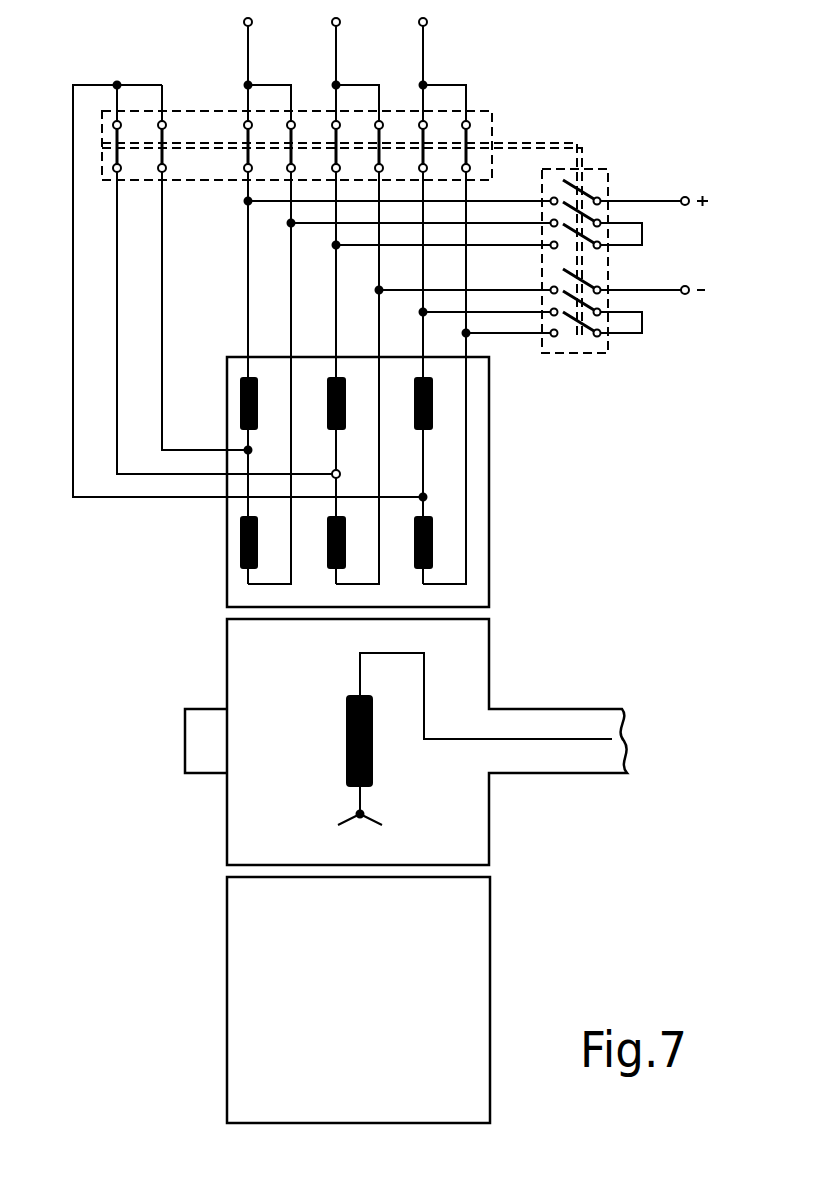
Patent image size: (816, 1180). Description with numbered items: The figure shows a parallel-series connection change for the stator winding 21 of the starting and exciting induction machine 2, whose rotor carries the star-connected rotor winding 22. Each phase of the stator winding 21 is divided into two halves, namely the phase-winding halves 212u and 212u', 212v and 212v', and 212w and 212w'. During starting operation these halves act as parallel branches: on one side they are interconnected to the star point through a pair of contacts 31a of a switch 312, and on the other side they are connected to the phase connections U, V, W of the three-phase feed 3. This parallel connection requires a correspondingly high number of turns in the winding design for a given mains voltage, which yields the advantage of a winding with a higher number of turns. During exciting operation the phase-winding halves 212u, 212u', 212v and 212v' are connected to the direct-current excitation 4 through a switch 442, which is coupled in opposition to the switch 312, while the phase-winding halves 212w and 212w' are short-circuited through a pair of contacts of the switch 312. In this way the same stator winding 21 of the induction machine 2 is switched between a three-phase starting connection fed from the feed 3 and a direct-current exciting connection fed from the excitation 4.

The three-phase feed 3 is at (310, 14).
The pair of contacts 31a is at (168, 120).
The switch 312 is at (530, 84).
The direct-current excitation 4 is at (728, 258).
The switch 442 is at (668, 387).
The stator winding 21 is at (478, 487).
The phase-winding half 212u is at (211, 399).
The phase-winding half 212v is at (350, 430).
The phase-winding half 212w is at (488, 398).
The phase-winding half 212u' is at (212, 563).
The phase-winding half 212v' is at (325, 563).
The phase-winding half 212w' is at (493, 563).
The starting and exciting induction machine 2 is at (155, 831).
The rotor winding 22 is at (347, 738).